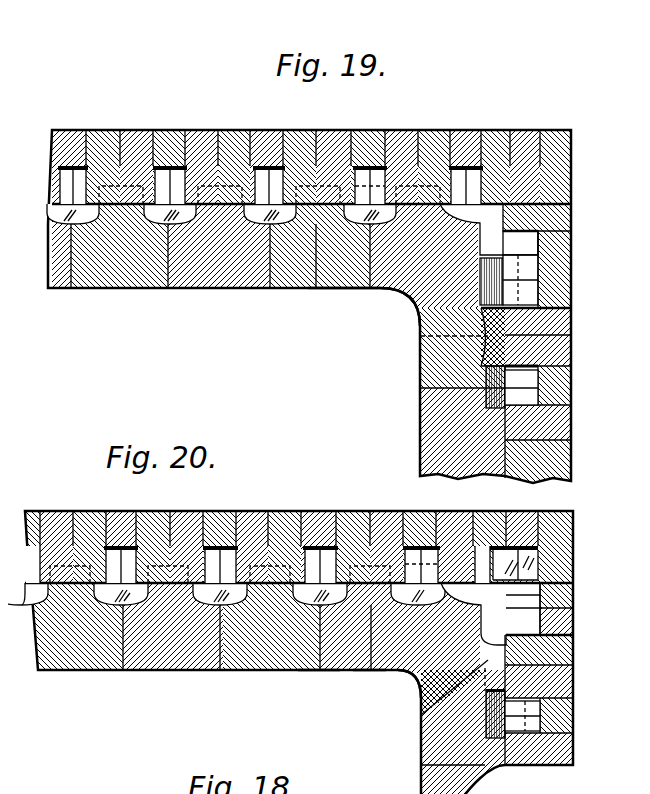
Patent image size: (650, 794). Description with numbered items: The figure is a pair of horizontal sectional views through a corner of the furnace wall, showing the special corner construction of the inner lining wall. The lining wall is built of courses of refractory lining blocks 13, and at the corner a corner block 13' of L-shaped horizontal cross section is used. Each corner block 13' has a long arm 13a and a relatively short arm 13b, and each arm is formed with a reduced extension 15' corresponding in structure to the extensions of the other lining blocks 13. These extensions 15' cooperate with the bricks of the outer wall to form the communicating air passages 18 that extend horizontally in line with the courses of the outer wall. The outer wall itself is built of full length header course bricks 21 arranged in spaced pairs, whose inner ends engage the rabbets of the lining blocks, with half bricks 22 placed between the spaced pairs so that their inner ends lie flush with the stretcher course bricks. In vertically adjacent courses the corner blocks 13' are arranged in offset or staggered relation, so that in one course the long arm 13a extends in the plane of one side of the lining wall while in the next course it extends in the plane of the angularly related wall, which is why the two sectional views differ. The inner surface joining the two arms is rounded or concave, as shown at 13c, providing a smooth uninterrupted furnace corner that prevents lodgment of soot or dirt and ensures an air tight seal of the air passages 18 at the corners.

In FIG. 19, the refractory lining block 13 is at (309, 306).
In FIG. 20, the refractory lining block 13 is at (290, 652).
In FIG. 19, the corner block 13' is at (440, 348).
In FIG. 20, the corner block 13' is at (367, 687).
In FIG. 19, the long arm of corner block 13a is at (430, 357).
In FIG. 20, the long arm of corner block 13a is at (313, 663).
In FIG. 19, the short arm of corner block 13b is at (363, 283).
In FIG. 20, the short arm of corner block 13b is at (415, 708).
In FIG. 19, the rounded inner corner surface 13c is at (397, 300).
In FIG. 20, the rounded inner corner surface 13c is at (407, 670).
In FIG. 19, the reduced extension 15' is at (520, 306).
In FIG. 20, the reduced extension 15' is at (507, 688).
In FIG. 19, the horizontal air passage 18 is at (520, 237).
In FIG. 19, the full length header course brick 21 is at (108, 123).
In FIG. 20, the full length header course brick 21 is at (260, 503).
In FIG. 19, the half brick 22 is at (176, 123).
In FIG. 20, the half brick 22 is at (200, 503).